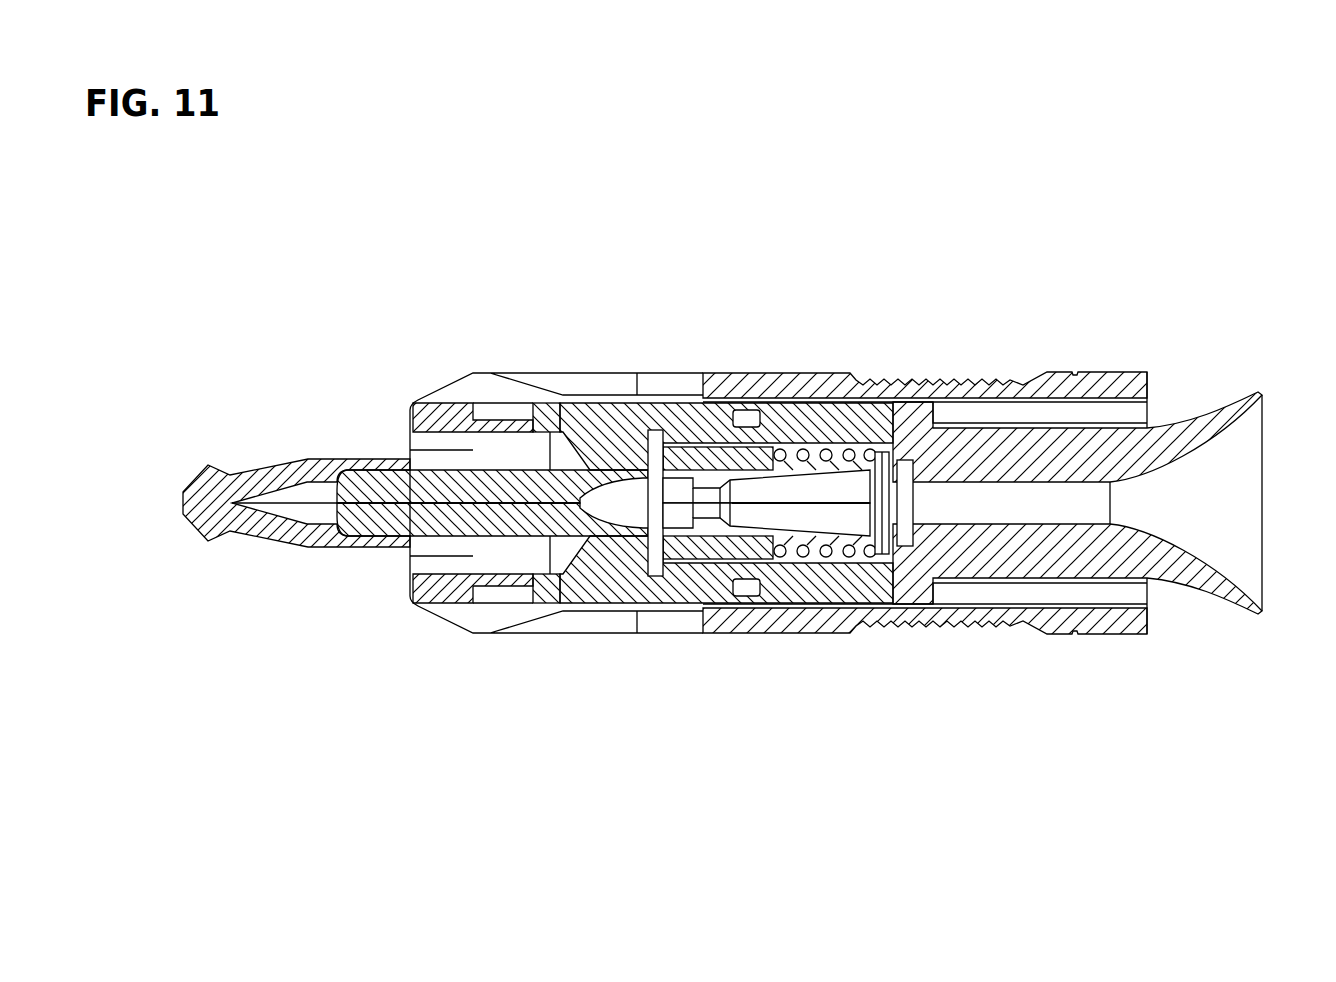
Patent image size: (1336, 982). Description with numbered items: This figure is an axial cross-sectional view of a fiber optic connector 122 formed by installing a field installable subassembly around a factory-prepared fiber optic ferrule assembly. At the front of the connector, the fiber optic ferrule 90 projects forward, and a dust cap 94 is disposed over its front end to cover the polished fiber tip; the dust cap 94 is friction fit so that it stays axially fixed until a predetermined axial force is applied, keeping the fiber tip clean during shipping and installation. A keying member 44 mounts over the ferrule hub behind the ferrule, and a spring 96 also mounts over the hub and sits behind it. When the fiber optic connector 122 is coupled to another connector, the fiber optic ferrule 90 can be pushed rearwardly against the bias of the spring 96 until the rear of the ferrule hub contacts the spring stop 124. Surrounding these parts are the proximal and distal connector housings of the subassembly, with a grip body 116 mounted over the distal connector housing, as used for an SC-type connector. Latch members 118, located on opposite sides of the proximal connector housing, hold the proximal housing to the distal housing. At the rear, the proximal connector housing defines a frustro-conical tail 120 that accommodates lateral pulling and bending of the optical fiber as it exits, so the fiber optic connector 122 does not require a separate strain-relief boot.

The keying member 44 is at (680, 553).
The fiber optic ferrule 90 is at (389, 478).
The dust cap 94 is at (265, 483).
The spring 96 is at (798, 450).
The grip body 116 is at (678, 372).
The latch members 118 is at (845, 378).
The frustro-conical tail 120 is at (1218, 403).
The fiber optic connector 122 is at (541, 316).
The spring stop 124 is at (890, 443).